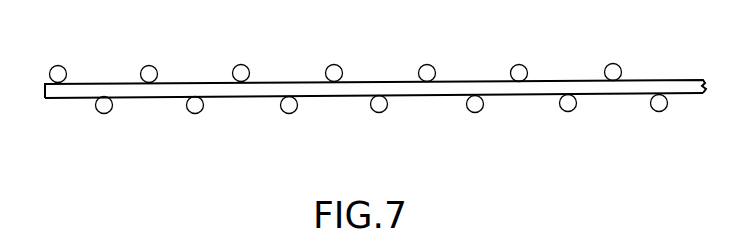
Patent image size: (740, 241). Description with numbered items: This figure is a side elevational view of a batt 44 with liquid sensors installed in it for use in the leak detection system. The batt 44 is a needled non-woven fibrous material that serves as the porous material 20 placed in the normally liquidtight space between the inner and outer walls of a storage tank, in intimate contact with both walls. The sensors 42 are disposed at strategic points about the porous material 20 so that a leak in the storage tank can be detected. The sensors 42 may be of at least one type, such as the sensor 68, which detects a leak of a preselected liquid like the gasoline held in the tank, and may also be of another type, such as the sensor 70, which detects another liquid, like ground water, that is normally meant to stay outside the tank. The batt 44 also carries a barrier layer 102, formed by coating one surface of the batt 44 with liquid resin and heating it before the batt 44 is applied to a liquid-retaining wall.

The porous material 20 is at (410, 110).
The sensors 42 is at (105, 114).
The batt 44 is at (553, 87).
The sensor 68 is at (197, 114).
The sensor 70 is at (247, 68).
The barrier layer 102 is at (617, 95).